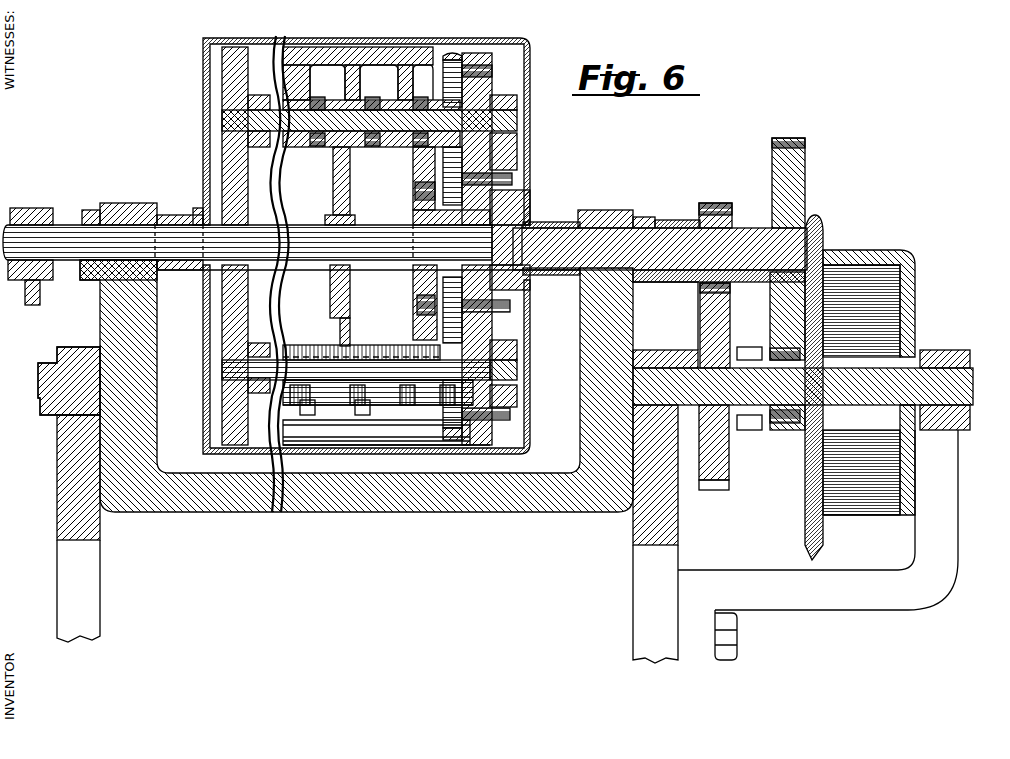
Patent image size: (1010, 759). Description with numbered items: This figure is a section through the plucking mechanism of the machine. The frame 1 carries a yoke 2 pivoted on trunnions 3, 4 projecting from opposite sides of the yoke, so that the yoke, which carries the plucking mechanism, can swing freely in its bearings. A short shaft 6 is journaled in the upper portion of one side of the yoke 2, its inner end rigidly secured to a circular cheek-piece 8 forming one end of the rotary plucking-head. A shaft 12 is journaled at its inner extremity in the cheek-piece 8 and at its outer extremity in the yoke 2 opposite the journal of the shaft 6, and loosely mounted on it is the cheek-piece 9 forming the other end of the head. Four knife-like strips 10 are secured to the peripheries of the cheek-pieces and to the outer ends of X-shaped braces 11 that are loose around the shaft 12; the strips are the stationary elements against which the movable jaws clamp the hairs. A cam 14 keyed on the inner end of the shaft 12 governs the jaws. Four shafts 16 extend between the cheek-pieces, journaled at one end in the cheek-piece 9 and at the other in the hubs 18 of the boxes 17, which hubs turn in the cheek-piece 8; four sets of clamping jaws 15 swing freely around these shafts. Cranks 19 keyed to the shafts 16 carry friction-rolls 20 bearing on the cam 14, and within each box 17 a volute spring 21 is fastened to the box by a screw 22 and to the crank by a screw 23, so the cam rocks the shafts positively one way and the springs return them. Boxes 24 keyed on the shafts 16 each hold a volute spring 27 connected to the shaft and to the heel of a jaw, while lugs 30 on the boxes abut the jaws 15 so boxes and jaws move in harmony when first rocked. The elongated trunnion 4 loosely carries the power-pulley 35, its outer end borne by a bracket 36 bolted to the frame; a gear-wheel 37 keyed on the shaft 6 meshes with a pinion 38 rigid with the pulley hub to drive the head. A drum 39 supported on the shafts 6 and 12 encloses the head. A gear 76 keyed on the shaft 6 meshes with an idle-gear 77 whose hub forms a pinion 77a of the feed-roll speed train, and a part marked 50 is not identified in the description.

The frame 1 is at (90, 585).
The yoke 2 is at (335, 506).
The trunnion 3 is at (40, 378).
The trunnion 4 is at (655, 368).
The short shaft 6 is at (738, 240).
The circular cheek-piece 8 is at (518, 160).
The cheek-piece 9 is at (222, 154).
The knife-like strips 10 is at (396, 441).
The X-shaped braces 11 is at (343, 188).
The shaft 12 is at (302, 233).
The cam 14 is at (413, 215).
The clamping jaws 15 is at (322, 50).
The shafts 16 is at (222, 118).
The boxes 17 is at (475, 58).
The hubs 18 is at (518, 102).
The cranks 19 is at (415, 160).
The friction-rolls 20 is at (415, 195).
The volute spring 21 is at (454, 244).
The screw 22 is at (449, 53).
The screw 23 is at (494, 72).
The boxes 24 is at (376, 350).
The volute spring 27 is at (317, 140).
The lugs 30 is at (347, 406).
The power-pulley 35 is at (876, 256).
The bracket 36 is at (900, 570).
The gear-wheel 37 is at (805, 190).
The pinion 38 is at (776, 426).
The drum 39 is at (205, 80).
The coupling 50 is at (28, 284).
The gear 76 is at (712, 205).
The idle-gear 77 is at (724, 470).
The pinion 77a is at (748, 347).